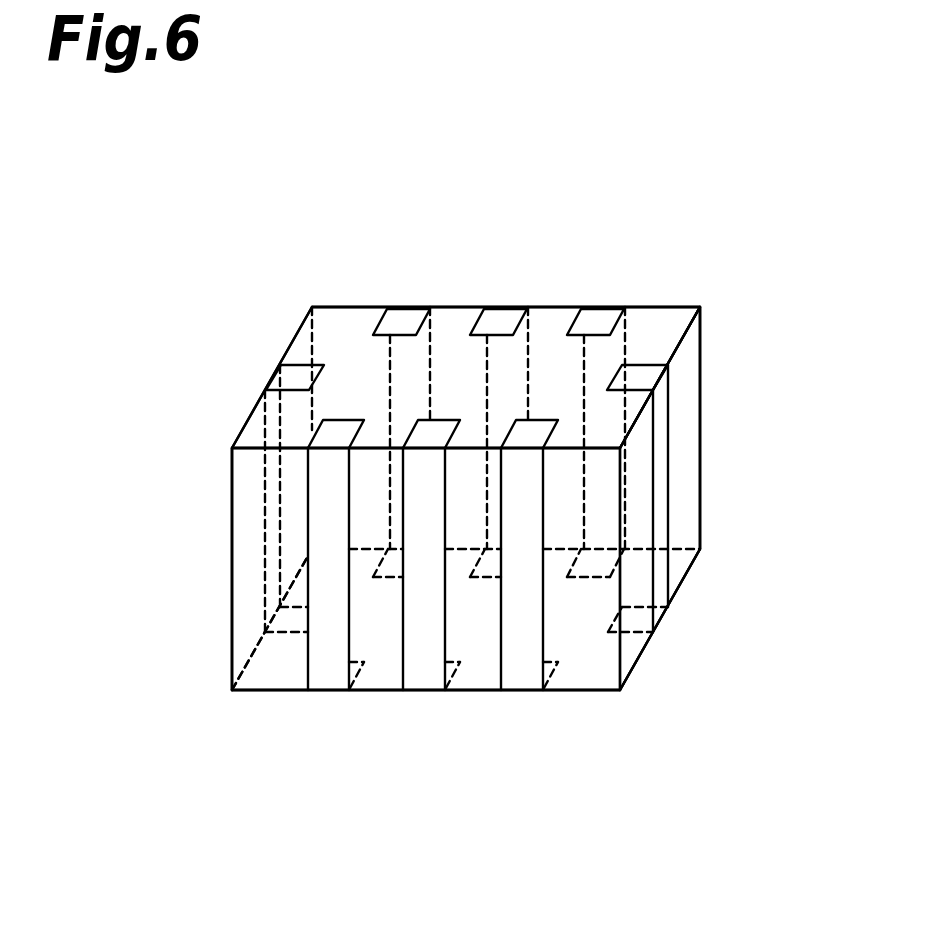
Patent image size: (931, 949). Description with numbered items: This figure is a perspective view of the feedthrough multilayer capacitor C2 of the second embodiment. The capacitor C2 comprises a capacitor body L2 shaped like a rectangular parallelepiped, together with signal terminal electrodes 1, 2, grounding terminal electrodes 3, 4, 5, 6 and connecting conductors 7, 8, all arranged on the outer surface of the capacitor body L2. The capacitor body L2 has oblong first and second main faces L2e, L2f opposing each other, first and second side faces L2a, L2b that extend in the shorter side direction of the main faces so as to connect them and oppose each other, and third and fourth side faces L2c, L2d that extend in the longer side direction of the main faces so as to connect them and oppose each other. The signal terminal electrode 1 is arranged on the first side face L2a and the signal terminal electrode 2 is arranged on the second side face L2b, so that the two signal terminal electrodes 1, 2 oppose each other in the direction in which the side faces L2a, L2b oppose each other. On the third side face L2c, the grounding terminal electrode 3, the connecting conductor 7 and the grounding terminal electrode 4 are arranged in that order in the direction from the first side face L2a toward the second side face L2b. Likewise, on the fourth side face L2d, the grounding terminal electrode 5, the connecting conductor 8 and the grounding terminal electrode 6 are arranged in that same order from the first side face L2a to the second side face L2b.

The feedthrough multilayer capacitor C2 is at (669, 153).
The capacitor body L2 is at (680, 307).
The first side face L2a is at (257, 545).
The second side face L2b is at (685, 498).
The third side face L2c is at (390, 625).
The fourth side face L2d is at (677, 432).
The first main face L2e is at (350, 323).
The second main face L2f is at (582, 648).
The signal terminal electrode 1 is at (297, 378).
The signal terminal electrode 2 is at (660, 557).
The grounding terminal electrode 3 is at (330, 667).
The grounding terminal electrode 4 is at (525, 667).
The grounding terminal electrode 5 is at (403, 315).
The grounding terminal electrode 6 is at (600, 315).
The connecting conductor 7 is at (427, 667).
The connecting conductor 8 is at (503, 315).